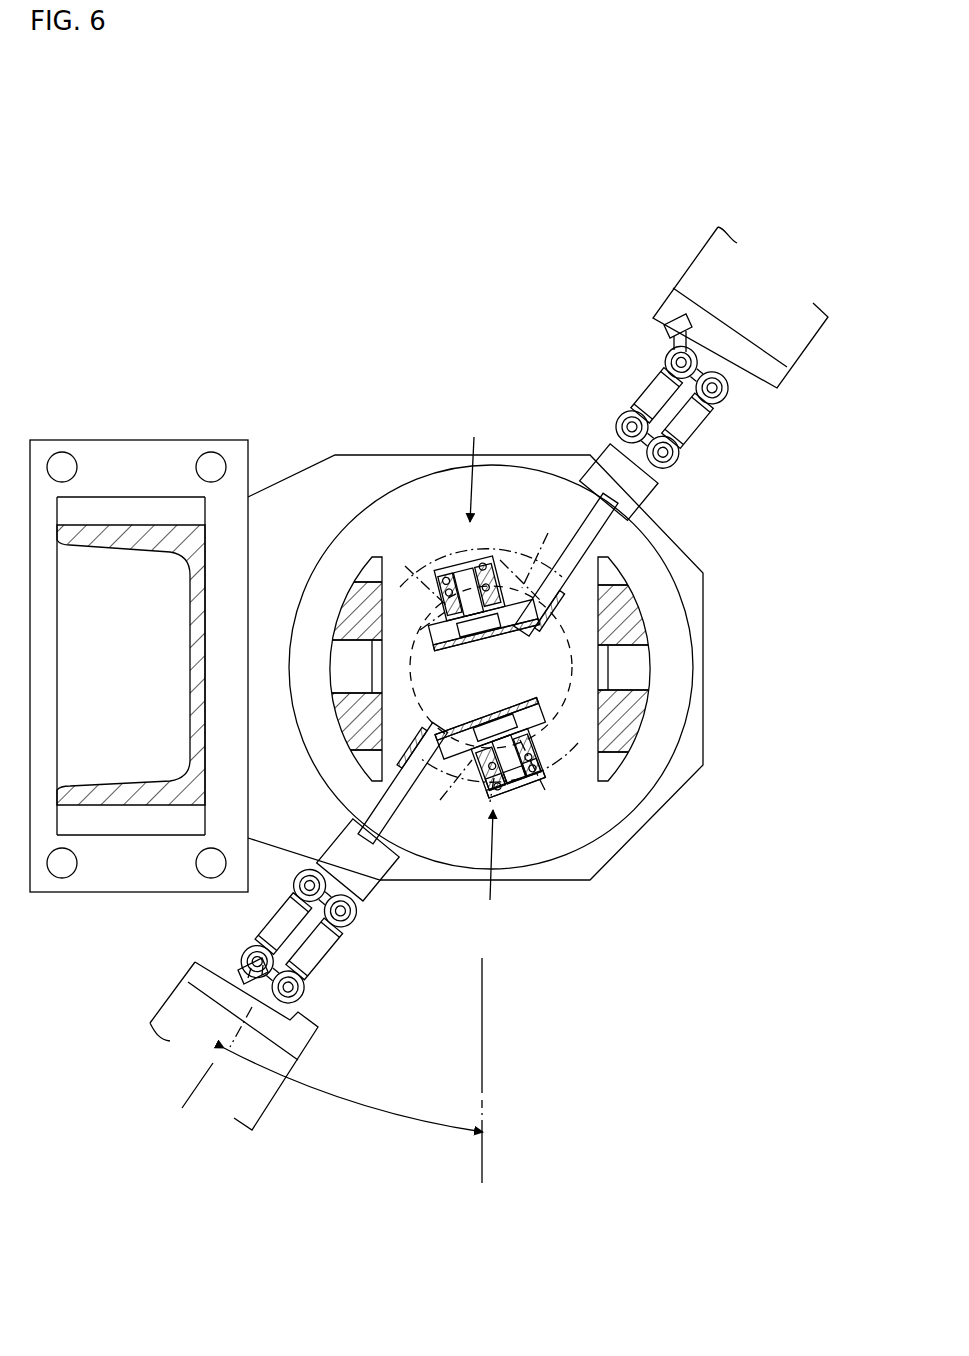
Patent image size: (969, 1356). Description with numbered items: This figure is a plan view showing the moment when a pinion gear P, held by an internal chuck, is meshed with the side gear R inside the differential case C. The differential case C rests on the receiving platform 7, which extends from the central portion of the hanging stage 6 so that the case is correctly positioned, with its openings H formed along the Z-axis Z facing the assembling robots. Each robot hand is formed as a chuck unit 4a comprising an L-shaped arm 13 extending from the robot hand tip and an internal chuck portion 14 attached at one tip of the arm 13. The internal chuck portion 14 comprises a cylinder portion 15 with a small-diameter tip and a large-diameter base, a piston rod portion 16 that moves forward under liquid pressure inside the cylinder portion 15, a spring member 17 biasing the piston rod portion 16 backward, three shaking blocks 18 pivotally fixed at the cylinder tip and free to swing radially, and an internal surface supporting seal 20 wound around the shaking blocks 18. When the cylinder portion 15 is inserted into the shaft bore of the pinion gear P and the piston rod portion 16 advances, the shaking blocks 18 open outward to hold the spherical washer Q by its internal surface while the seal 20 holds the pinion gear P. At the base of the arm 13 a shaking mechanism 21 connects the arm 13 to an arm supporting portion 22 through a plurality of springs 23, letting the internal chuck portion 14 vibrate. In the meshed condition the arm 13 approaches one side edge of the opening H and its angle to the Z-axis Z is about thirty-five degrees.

The chuck unit 4a is at (713, 272).
The hanging stage 6 is at (137, 525).
The receiving platform 7 is at (302, 480).
The arm 13 is at (562, 502).
The internal chuck portion 14 is at (552, 695).
The cylinder portion 15 is at (491, 648).
The piston rod portion 16 is at (513, 783).
The spring member 17 is at (547, 762).
The shaking blocks 18 is at (533, 787).
The internal surface supporting seal 20 is at (488, 787).
The shaking mechanism 21 is at (724, 429).
The arm supporting portion 22 is at (675, 333).
The springs 23 is at (636, 408).
The differential case C is at (633, 613).
The opening H is at (480, 672).
The pinion gear P is at (468, 686).
The spherical washer Q is at (480, 556).
The side gear R is at (499, 639).
The Z-axis Z is at (483, 1095).